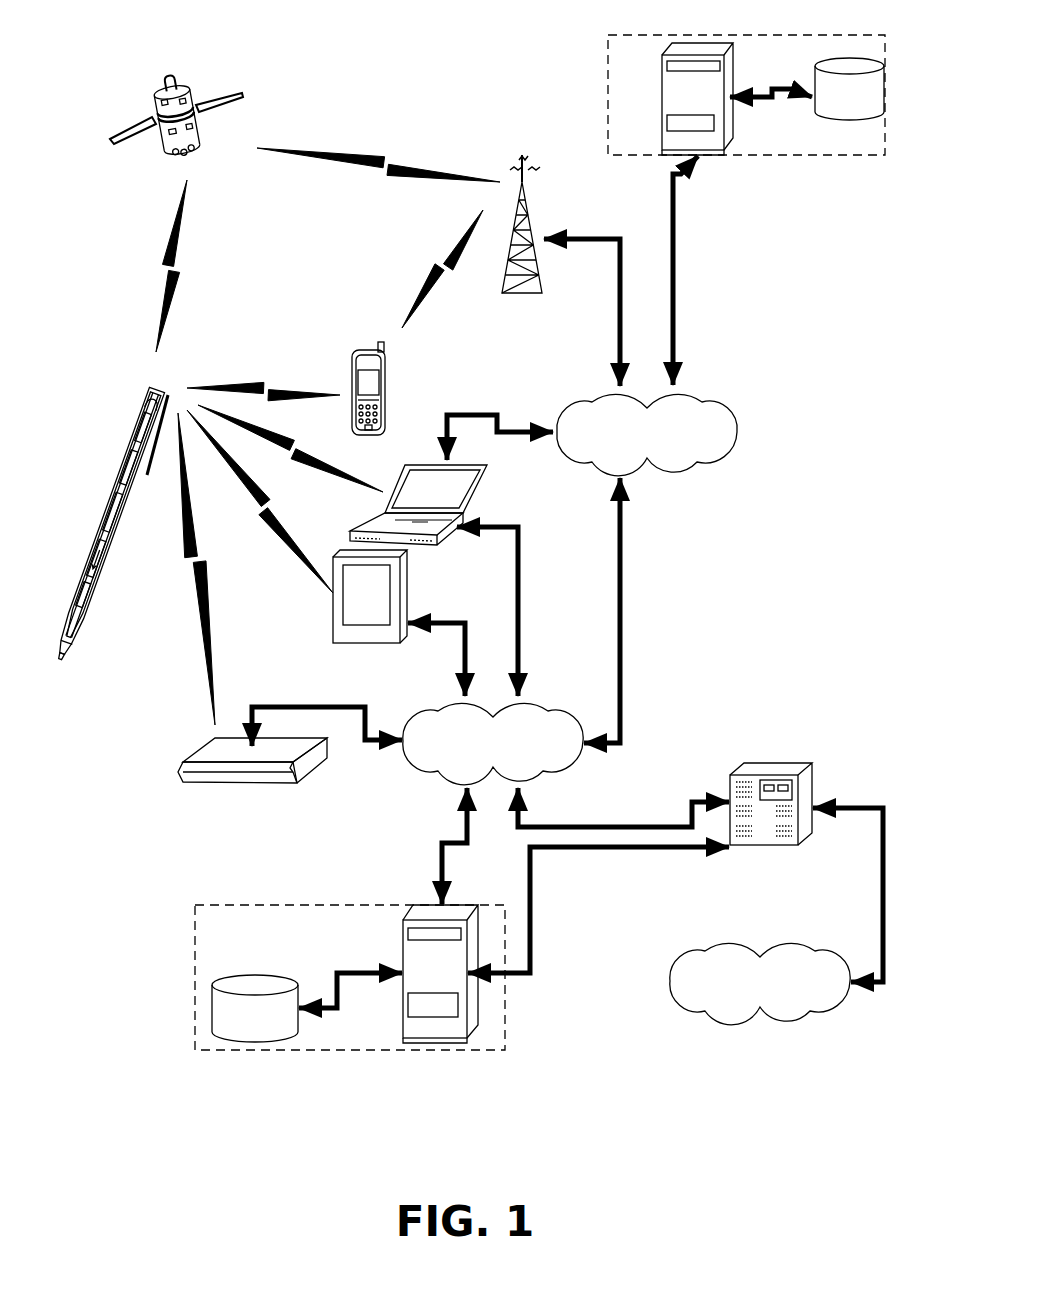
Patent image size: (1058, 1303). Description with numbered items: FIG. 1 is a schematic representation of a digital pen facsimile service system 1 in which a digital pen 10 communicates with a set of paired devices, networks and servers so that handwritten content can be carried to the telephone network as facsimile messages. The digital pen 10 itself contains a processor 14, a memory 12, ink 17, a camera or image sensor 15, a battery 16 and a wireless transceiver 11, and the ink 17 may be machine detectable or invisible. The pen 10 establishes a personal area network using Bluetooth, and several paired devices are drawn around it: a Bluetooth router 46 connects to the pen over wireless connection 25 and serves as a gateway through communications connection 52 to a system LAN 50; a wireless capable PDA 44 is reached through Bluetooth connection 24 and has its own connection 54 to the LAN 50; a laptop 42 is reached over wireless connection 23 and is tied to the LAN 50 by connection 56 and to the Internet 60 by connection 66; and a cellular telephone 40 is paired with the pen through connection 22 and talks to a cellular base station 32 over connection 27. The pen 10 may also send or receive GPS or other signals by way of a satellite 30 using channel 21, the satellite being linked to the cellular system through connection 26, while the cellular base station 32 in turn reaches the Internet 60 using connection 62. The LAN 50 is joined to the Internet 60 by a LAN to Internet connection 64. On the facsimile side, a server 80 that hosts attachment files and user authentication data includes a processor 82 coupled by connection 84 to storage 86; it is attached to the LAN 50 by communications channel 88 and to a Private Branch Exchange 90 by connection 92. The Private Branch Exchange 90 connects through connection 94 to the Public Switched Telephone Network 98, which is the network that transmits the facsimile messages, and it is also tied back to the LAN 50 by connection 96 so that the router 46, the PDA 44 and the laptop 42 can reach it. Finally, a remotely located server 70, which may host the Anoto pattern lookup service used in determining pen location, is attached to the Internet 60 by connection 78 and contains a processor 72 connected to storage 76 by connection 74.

The digital pen facsimile service system 1 is at (142, 1088).
The digital pen 10 is at (127, 391).
The wireless transceiver 11 is at (128, 433).
The memory 12 is at (153, 443).
The processor 14 is at (98, 582).
The camera or image sensor 15 is at (80, 643).
The battery 16 is at (103, 505).
The ink 17 is at (73, 602).
The channel 21 is at (185, 215).
The connection 22 is at (303, 392).
The wireless connection 23 is at (352, 476).
The Bluetooth connection 24 is at (258, 512).
The wireless connection 25 is at (200, 647).
The connection 26 is at (455, 181).
The connection 27 is at (427, 288).
The satellite 30 is at (130, 102).
The cellular base station 32 is at (527, 200).
The cellular telephone 40 is at (386, 413).
The laptop 42 is at (477, 500).
The wireless capable PDA 44 is at (405, 574).
The Bluetooth router 46 is at (173, 778).
The LAN 50 is at (430, 770).
The communications connection 52 is at (336, 705).
The connection 54 is at (462, 641).
The connection 56 is at (518, 585).
The Internet 60 is at (725, 447).
The connection 62 is at (620, 296).
The LAN to Internet connection 64 is at (620, 668).
The connection 66 is at (478, 417).
The server 70 is at (608, 88).
The processor 72 is at (663, 117).
The connection 74 is at (780, 99).
The storage 76 is at (827, 115).
The connection 78 is at (673, 260).
The server 80 is at (195, 953).
The processor 82 is at (400, 953).
The connection 84 is at (338, 985).
The storage 86 is at (244, 974).
The communications channel 88 is at (437, 843).
The Private Branch Exchange 90 is at (747, 762).
The connection 92 is at (643, 850).
The connection 94 is at (883, 875).
The connection 96 is at (603, 827).
The Public Switched Telephone Network 98 is at (667, 972).